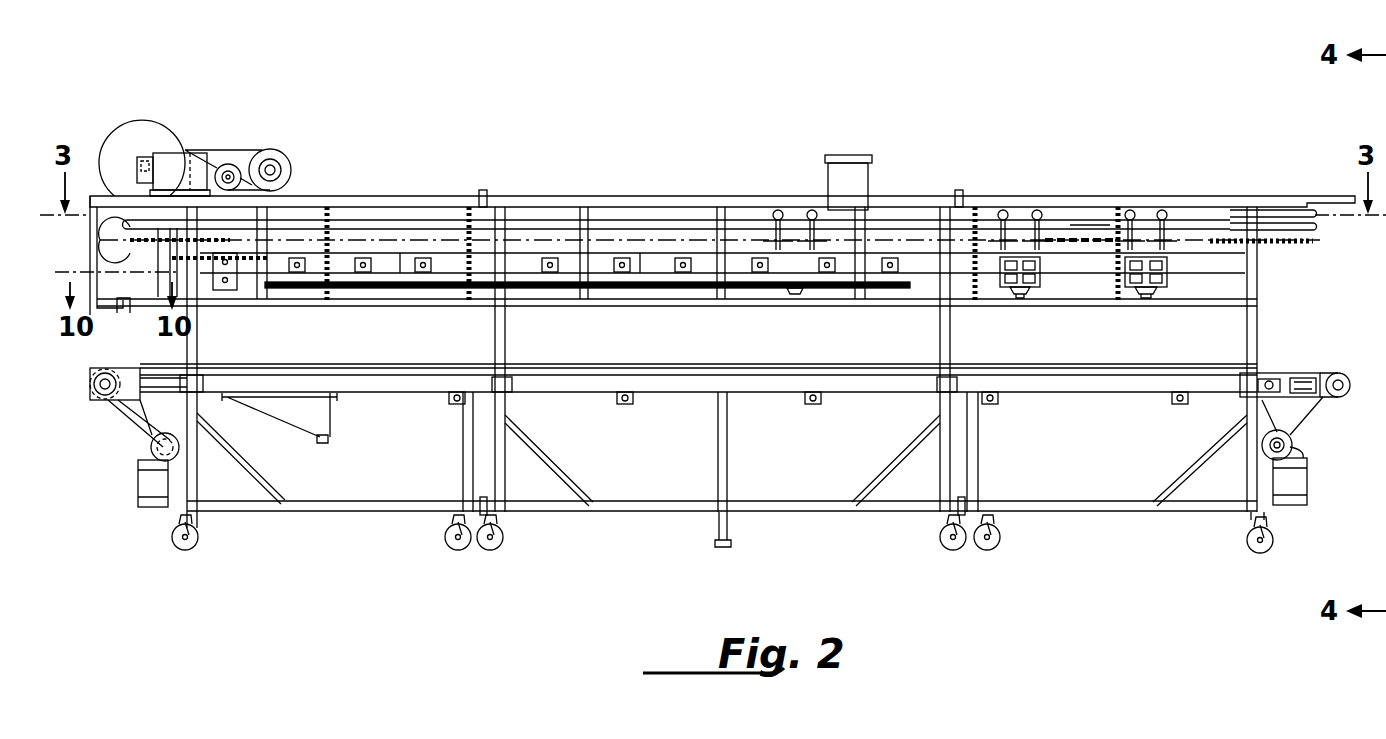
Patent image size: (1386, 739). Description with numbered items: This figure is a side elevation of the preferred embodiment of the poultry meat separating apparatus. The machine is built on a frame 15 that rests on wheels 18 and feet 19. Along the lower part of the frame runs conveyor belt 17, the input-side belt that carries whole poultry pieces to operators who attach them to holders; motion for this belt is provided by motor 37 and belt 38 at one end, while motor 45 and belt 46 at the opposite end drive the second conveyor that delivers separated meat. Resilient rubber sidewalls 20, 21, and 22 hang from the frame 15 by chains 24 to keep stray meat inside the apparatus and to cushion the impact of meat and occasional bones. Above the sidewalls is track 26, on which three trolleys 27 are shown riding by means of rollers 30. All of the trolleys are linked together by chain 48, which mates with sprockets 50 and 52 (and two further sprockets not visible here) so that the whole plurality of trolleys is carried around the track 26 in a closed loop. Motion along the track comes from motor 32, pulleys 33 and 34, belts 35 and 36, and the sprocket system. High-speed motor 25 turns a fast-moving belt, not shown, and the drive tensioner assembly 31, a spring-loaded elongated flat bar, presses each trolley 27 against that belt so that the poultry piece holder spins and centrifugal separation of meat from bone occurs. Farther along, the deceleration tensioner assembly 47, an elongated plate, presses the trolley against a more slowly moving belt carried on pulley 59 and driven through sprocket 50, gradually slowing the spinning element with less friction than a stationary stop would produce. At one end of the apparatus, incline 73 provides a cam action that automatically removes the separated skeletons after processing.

The frame 15 is at (710, 198).
The conveyor belt 17 is at (1310, 373).
The wheels 18 is at (176, 540).
The feet 19 is at (197, 540).
The sidewall 20 is at (1112, 347).
The sidewall 21 is at (778, 347).
The sidewall 22 is at (443, 352).
The chains 24 is at (327, 215).
The high-speed motor 25 is at (848, 170).
The track 26 is at (1082, 224).
The trolley 27 is at (797, 298).
The rollers 30 is at (812, 212).
The drive tensioner assembly 31 is at (658, 270).
The motor 32 is at (290, 160).
The pulley 33 is at (135, 143).
The pulley 34 is at (228, 164).
The belt 35 is at (185, 150).
The belt 36 is at (248, 160).
The motor 37 is at (1300, 483).
The belt 38 is at (1320, 415).
The motor 45 is at (148, 487).
The belt 46 is at (122, 420).
The deceleration tensioner assembly 47 is at (400, 268).
The chain 48 is at (1070, 238).
The sprocket 50 is at (125, 238).
The sprocket 52 is at (1303, 247).
The pulley 59 is at (238, 288).
The incline 73 is at (128, 307).